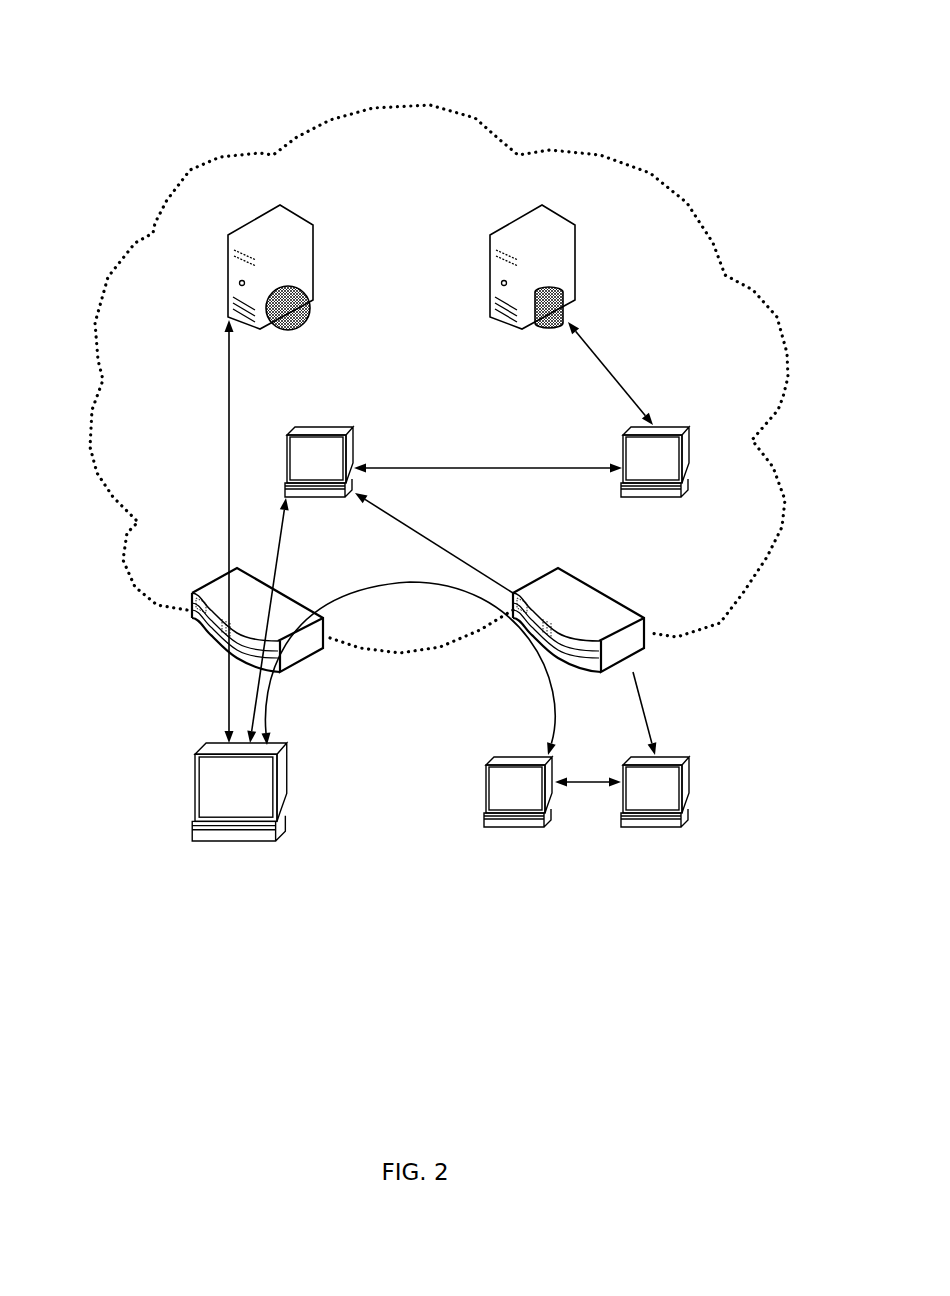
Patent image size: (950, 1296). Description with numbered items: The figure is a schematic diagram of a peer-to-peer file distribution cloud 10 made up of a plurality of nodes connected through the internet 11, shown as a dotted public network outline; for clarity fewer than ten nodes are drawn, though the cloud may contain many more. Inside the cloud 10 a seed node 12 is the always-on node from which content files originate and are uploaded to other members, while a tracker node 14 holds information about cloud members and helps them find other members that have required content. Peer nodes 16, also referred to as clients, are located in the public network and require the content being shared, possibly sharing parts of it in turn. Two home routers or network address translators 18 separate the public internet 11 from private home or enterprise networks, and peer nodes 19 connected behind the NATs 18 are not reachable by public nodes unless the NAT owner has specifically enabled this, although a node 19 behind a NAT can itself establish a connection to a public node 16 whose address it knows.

The peer-to-peer file distribution cloud 10 is at (172, 34).
The internet 11 is at (427, 367).
The seed node 12 is at (228, 282).
The tracker node 14 is at (490, 270).
The peer node 16 is at (323, 425).
The network address translator 18 is at (288, 593).
The peer node 19 is at (287, 780).